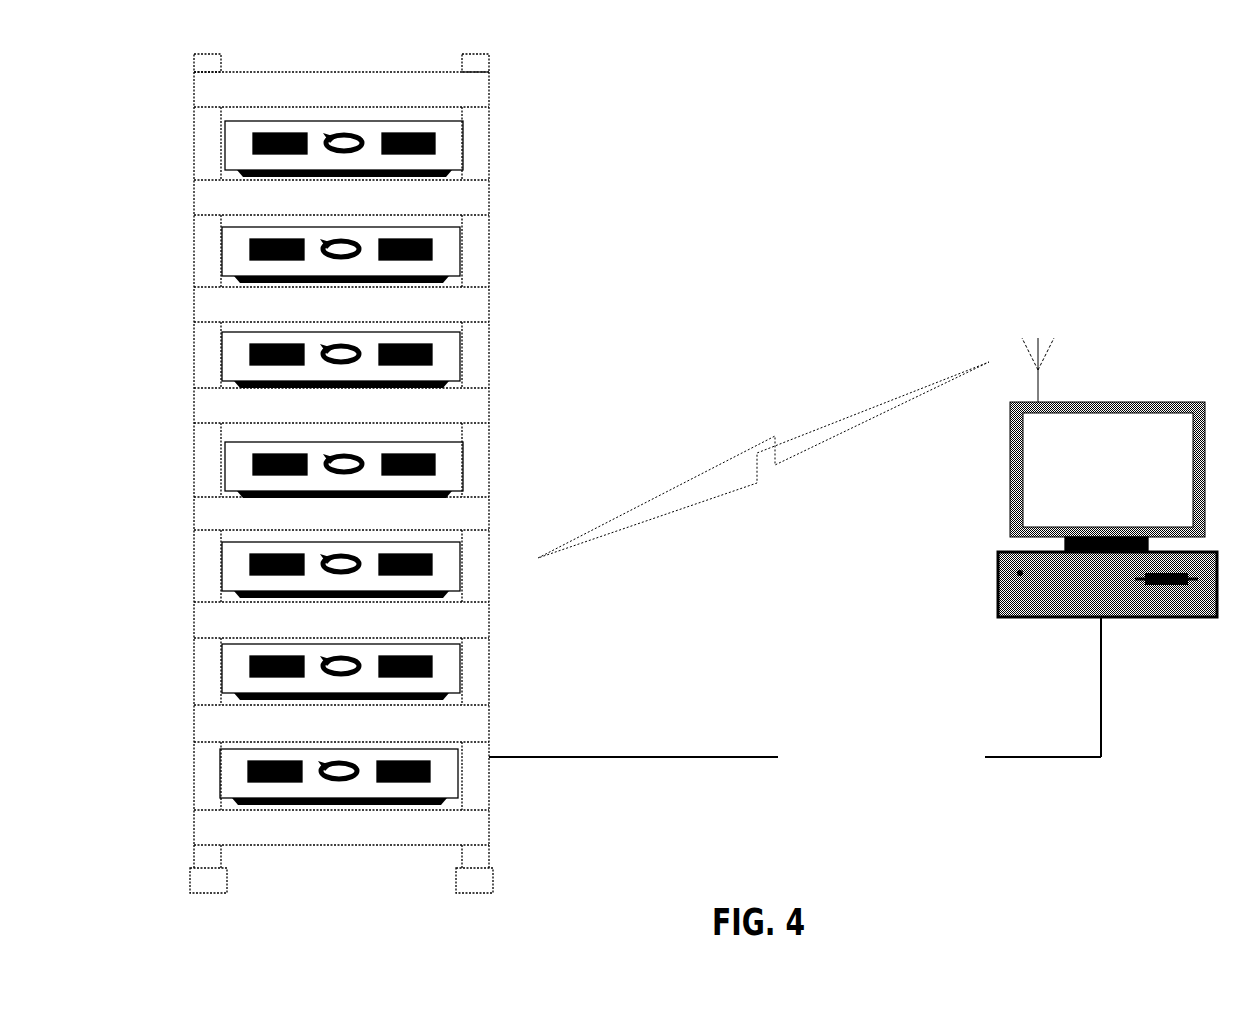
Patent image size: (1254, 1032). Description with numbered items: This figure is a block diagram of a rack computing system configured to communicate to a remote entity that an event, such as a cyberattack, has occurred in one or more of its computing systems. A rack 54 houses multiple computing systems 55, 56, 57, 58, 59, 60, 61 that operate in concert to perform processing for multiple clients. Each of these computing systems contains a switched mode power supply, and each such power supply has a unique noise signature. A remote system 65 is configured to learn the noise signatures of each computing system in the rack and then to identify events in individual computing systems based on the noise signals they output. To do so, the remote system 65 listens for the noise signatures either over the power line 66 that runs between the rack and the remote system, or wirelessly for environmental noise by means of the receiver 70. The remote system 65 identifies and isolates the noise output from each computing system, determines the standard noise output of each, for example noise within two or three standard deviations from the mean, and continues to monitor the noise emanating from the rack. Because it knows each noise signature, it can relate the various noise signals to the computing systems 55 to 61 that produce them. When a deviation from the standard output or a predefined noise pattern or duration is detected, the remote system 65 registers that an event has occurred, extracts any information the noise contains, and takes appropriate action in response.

The rack 54 is at (317, 67).
The computing system 55 is at (232, 157).
The computing system 56 is at (233, 257).
The computing system 57 is at (238, 368).
The computing system 58 is at (242, 467).
The computing system 59 is at (235, 570).
The computing system 60 is at (238, 668).
The computing system 61 is at (233, 775).
The remote system 65 is at (1166, 400).
The power line 66 is at (677, 757).
The receiver 70 is at (1038, 330).